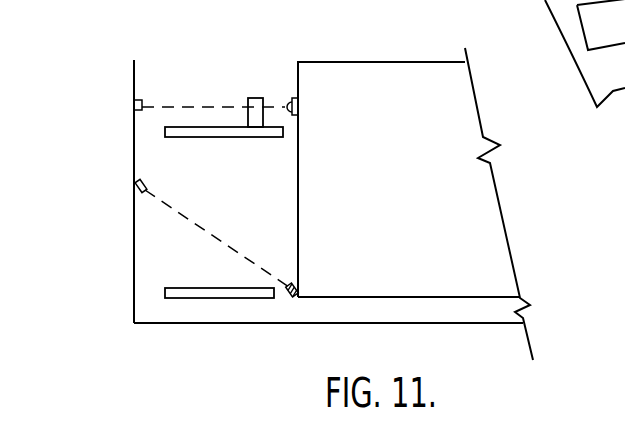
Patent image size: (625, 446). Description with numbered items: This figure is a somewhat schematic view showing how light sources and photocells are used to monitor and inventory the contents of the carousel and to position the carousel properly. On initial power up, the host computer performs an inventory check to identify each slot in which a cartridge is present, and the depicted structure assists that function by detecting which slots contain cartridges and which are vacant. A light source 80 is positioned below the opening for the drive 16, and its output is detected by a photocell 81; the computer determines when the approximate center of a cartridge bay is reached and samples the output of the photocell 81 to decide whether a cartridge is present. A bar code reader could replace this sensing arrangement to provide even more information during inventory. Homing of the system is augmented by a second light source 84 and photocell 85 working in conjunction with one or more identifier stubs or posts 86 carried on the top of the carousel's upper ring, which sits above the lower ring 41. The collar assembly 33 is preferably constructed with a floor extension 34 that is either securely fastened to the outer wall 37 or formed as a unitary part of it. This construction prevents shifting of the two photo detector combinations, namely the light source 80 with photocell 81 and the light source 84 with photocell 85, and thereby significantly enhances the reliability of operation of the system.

The drive 16 is at (422, 203).
The collar assembly 33 is at (134, 72).
The floor extension 34 is at (221, 328).
The outer wall 37 is at (134, 290).
The lower ring 41 is at (208, 288).
The light source 80 is at (298, 283).
The photocell 81 is at (137, 184).
The light source 84 is at (284, 100).
The photocell 85 is at (134, 106).
The identifier stub 86 is at (256, 98).